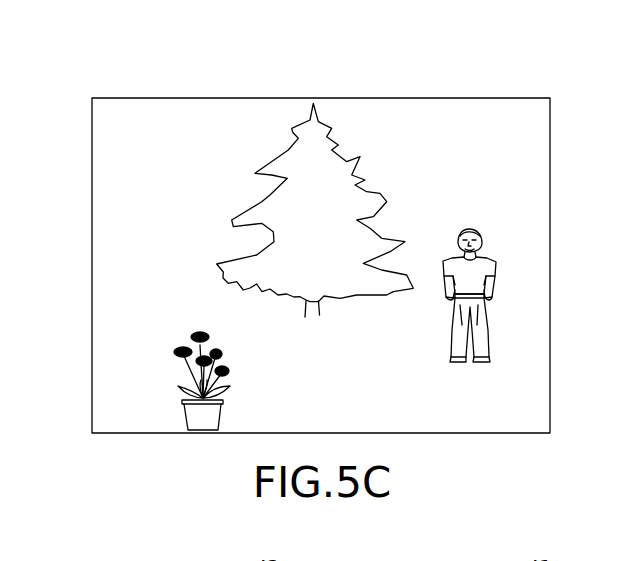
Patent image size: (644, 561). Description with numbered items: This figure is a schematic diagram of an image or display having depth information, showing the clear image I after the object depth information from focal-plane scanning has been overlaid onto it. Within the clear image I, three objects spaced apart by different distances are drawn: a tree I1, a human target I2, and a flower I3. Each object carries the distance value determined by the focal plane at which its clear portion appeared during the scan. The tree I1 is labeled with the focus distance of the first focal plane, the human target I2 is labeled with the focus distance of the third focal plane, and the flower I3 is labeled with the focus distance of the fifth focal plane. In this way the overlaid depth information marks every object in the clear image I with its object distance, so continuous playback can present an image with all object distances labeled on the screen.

The clear image I is at (510, 98).
The tree I1 is at (295, 151).
The human target I2 is at (492, 278).
The flower I3 is at (197, 375).